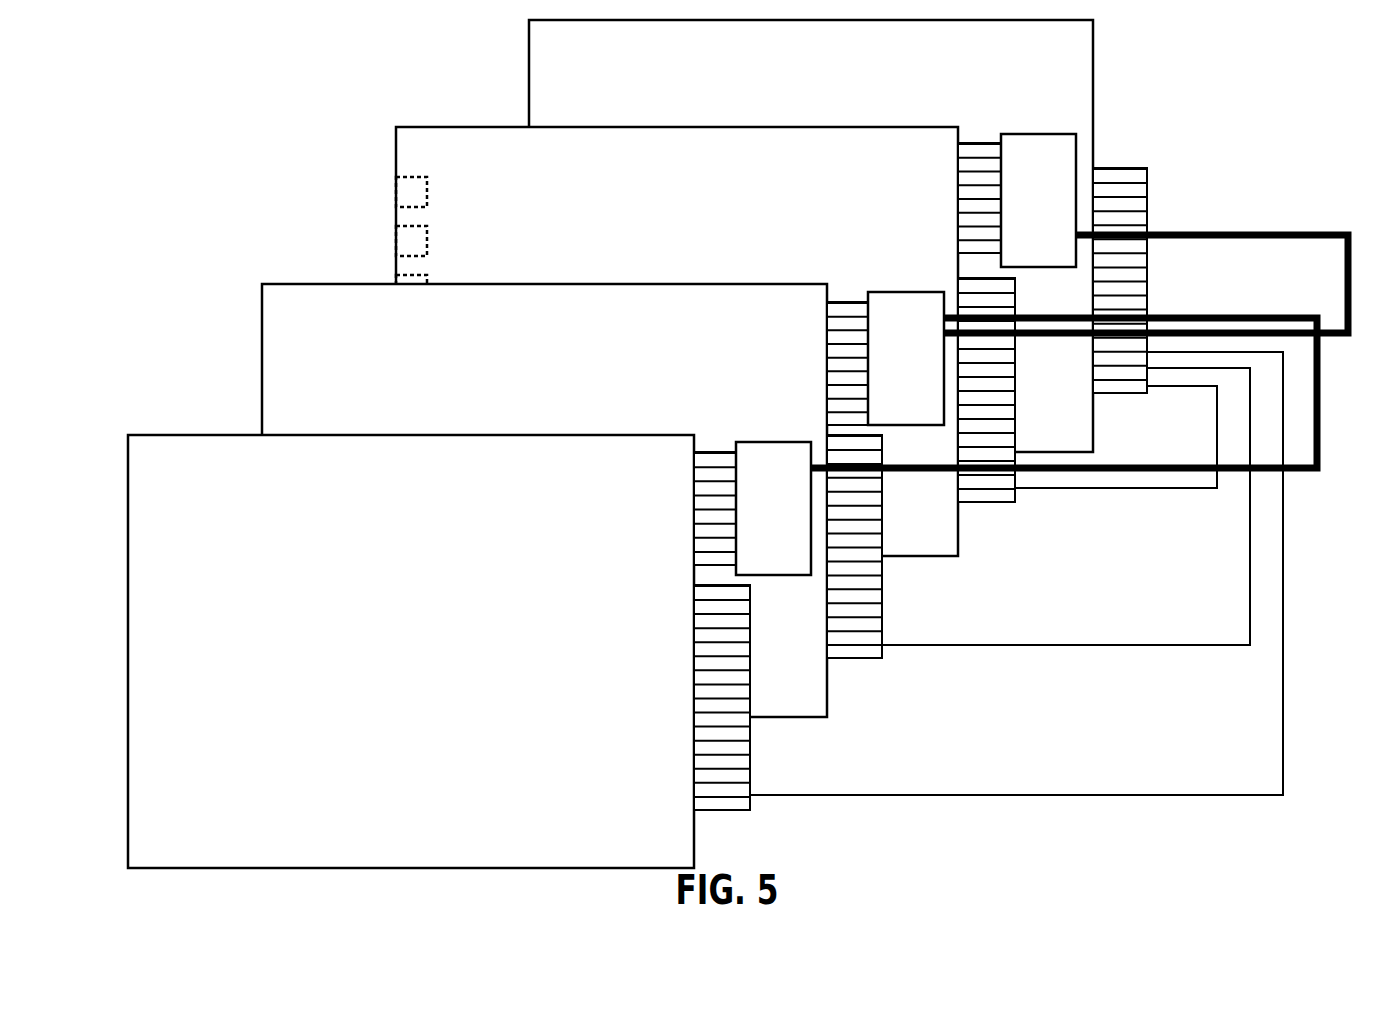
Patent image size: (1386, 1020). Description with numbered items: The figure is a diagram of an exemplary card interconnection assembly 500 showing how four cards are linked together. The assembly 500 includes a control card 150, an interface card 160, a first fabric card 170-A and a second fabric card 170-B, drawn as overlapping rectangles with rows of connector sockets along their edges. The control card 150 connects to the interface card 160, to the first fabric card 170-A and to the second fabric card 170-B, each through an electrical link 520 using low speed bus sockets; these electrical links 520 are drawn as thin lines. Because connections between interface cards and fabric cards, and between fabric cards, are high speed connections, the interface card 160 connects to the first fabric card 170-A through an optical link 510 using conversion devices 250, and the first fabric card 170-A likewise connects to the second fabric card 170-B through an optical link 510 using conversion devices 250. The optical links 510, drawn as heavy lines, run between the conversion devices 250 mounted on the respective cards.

The card interconnection assembly 500 is at (222, 76).
The control card 150 is at (811, 236).
The interface card 160 is at (677, 341).
The first fabric card 170-A is at (544, 500).
The second fabric card 170-B is at (411, 651).
The conversion device 250 is at (1032, 134).
The optical link 510 is at (1197, 306).
The electrical link 520 is at (1154, 500).